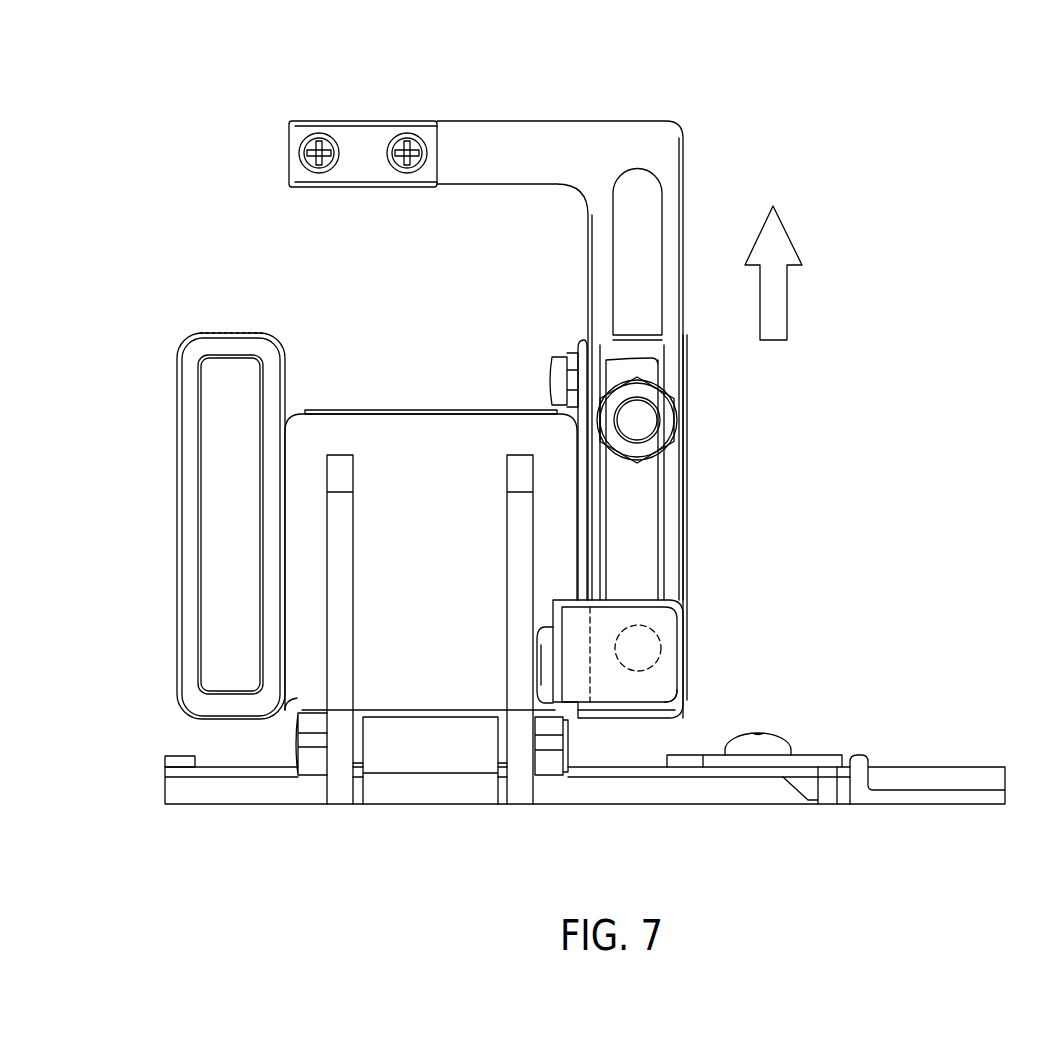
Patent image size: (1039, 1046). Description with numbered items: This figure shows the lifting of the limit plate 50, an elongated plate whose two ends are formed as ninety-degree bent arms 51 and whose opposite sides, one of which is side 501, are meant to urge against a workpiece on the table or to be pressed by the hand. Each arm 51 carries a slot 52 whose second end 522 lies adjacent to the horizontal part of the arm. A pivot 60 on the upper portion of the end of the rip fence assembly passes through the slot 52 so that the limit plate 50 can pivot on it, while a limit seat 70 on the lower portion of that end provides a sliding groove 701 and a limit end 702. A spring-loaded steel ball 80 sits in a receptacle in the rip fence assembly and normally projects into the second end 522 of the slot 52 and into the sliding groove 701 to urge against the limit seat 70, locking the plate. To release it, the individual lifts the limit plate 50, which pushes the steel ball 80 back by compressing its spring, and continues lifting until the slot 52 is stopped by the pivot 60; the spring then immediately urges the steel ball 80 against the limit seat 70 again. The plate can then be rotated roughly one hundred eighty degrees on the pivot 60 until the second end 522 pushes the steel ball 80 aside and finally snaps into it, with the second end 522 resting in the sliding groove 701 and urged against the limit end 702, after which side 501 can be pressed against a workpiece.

The limit plate 50 is at (362, 121).
The side 501 is at (290, 155).
The arm 51 is at (525, 140).
The slot 52 is at (632, 253).
The second end 522 is at (647, 188).
The pivot 60 is at (637, 420).
The limit seat 70 is at (683, 600).
The sliding groove 701 is at (663, 690).
The limit end 702 is at (590, 656).
The steel ball 80 is at (650, 648).